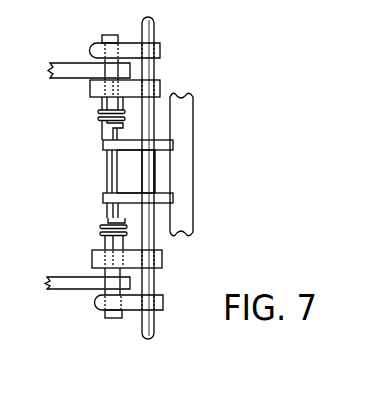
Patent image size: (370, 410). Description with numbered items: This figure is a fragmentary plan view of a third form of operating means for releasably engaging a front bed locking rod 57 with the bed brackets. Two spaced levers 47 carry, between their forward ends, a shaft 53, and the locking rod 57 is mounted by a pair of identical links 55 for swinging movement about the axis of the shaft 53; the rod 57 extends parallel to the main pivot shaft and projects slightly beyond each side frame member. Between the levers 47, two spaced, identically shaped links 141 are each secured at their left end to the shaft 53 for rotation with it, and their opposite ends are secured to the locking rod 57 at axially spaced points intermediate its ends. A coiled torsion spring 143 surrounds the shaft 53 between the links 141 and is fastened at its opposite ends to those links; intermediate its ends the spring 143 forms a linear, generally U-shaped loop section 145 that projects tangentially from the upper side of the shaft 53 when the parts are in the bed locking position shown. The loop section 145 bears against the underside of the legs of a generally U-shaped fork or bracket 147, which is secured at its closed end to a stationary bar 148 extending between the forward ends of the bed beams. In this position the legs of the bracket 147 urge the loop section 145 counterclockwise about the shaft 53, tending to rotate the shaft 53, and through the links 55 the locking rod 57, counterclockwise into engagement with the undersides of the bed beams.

The levers 47 is at (58, 79).
The shaft 53 is at (117, 319).
The links 55 is at (91, 50).
The locking rod 57 is at (148, 18).
The links 141 is at (90, 88).
The coiled torsion spring 143 is at (100, 227).
The loop section 145 is at (107, 172).
The bracket 147 is at (163, 175).
The stationary bar 148 is at (183, 128).